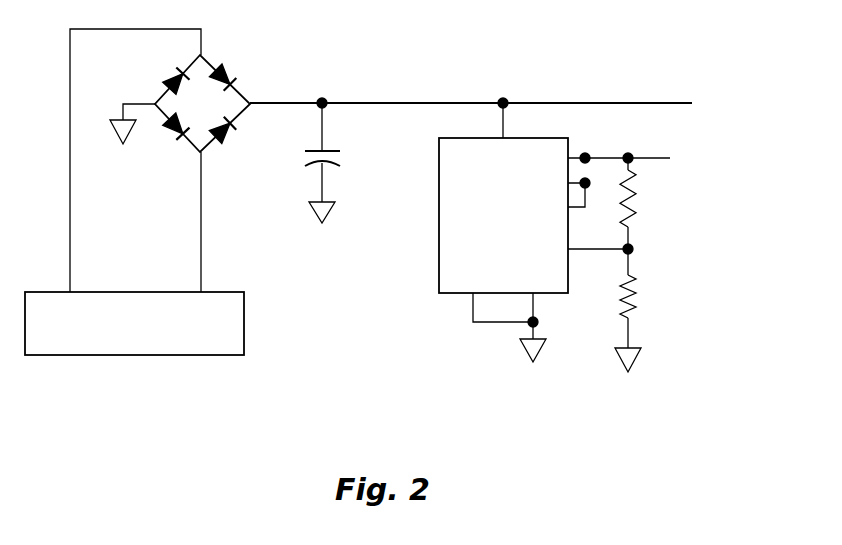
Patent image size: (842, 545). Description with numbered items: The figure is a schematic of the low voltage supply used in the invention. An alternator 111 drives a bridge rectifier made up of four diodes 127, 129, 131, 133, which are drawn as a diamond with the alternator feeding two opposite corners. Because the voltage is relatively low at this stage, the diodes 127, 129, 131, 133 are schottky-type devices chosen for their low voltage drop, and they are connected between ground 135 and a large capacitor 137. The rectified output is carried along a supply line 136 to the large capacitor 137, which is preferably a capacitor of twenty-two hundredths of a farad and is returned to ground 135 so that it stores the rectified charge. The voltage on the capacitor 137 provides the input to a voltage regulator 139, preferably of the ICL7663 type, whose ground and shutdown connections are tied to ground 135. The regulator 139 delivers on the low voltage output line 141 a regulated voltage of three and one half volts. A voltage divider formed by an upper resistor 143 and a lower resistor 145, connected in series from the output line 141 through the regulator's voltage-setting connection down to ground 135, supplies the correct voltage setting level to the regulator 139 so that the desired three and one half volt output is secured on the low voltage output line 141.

The alternator 111 is at (100, 347).
The diode 127 is at (234, 77).
The diode 129 is at (233, 134).
The diode 131 is at (168, 131).
The diode 133 is at (174, 73).
The ground 135 is at (115, 127).
The supply line 136 is at (610, 103).
The large capacitor 137 is at (307, 163).
The voltage regulator 139 is at (457, 233).
The low voltage output line 141 is at (640, 156).
The upper resistor 143 is at (633, 222).
The lower resistor 145 is at (640, 277).